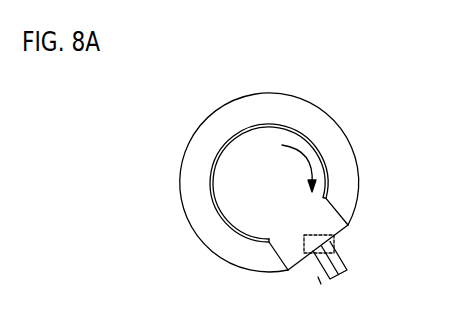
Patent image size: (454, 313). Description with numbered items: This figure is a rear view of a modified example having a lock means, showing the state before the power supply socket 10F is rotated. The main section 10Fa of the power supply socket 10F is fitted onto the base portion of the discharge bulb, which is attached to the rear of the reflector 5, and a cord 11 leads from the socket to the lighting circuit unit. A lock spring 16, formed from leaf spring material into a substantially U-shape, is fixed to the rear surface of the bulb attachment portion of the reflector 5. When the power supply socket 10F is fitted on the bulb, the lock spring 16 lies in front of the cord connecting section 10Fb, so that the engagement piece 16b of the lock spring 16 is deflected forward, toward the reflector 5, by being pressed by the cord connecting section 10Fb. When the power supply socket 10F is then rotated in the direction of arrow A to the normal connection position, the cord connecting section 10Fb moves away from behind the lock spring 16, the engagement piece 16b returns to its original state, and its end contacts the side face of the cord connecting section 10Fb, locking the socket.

The reflector 5 is at (330, 121).
The power supply socket 10F is at (272, 168).
The main section 10Fa is at (238, 157).
The cord connecting section 10Fb is at (334, 204).
The lock spring 16 is at (363, 240).
The engagement piece 16b is at (341, 248).
The cord 11 is at (322, 279).
The direction of arrow A is at (293, 165).